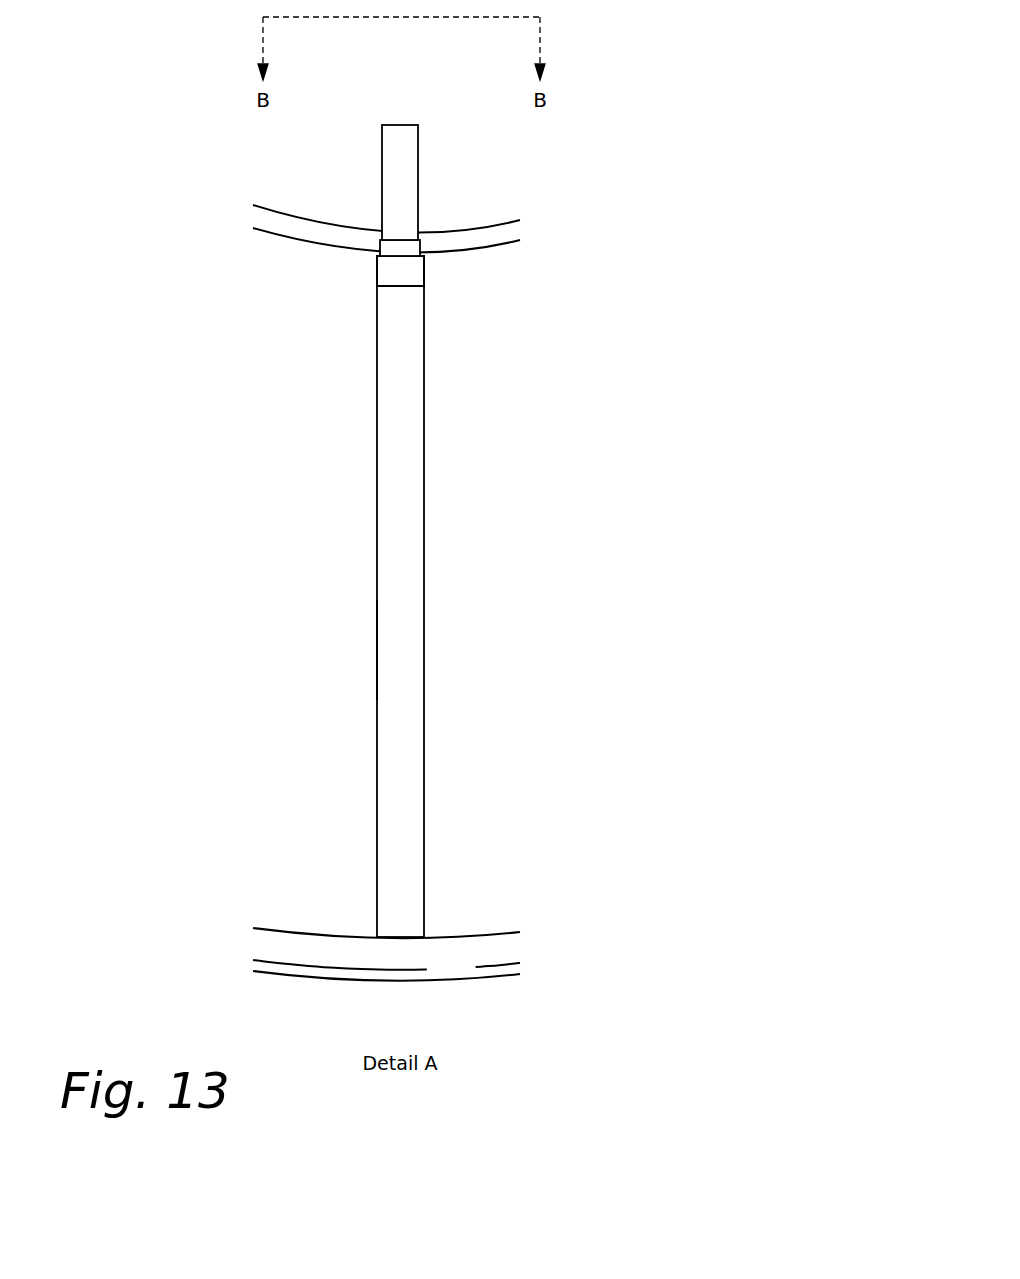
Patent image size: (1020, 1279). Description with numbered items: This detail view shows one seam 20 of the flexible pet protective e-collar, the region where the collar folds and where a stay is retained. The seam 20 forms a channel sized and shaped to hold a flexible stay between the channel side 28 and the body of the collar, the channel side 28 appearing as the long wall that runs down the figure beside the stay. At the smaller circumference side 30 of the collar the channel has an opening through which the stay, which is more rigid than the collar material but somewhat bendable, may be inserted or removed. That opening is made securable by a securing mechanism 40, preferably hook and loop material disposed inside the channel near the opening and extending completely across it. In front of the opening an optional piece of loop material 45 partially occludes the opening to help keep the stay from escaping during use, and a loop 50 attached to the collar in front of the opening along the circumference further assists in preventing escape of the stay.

The seam 20 is at (425, 475).
The channel side 28 is at (405, 648).
The smaller circumference side 30 is at (370, 230).
The securing mechanism 40 is at (410, 278).
The loop material 45 is at (377, 245).
The loop 50 is at (418, 179).